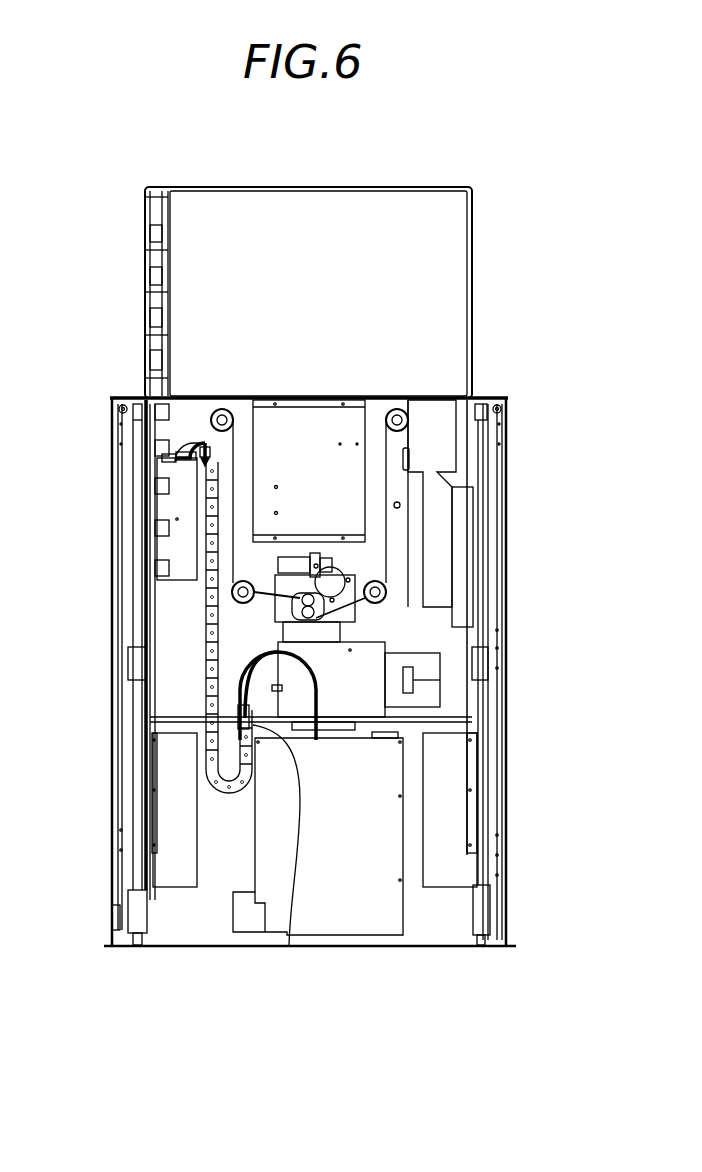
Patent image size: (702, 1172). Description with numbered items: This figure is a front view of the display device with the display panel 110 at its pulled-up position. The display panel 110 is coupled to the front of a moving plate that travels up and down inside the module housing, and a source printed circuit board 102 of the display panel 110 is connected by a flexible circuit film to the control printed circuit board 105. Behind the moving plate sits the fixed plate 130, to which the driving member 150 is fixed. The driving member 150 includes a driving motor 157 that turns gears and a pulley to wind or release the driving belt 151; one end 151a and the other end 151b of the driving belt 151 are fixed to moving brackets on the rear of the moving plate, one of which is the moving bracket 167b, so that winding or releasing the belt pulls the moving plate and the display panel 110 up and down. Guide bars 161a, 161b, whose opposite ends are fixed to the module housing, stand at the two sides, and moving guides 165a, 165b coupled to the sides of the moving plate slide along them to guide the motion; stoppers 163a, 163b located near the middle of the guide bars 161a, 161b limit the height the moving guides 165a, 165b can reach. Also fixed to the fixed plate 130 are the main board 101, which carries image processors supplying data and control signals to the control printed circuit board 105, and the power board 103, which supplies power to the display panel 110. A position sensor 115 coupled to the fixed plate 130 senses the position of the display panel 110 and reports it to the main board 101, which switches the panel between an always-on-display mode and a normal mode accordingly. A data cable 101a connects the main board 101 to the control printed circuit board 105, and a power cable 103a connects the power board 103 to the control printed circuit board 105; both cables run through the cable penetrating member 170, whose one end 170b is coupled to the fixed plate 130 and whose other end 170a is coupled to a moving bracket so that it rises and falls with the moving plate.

The display panel 110 is at (322, 214).
The source printed circuit board 102 is at (152, 297).
The one end of the driving belt 151a is at (238, 415).
The driving belt 151 is at (435, 418).
The moving bracket 167b is at (458, 432).
The other end of the driving belt 151b is at (406, 460).
The data cable 101a is at (184, 430).
The power cable 103a is at (200, 452).
The other end of the cable penetrating member 170a is at (186, 470).
The control printed circuit board 105 is at (180, 518).
The driving motor 157 is at (285, 562).
The driving member 150 is at (352, 567).
The guide bar 161a is at (145, 592).
The main board 101 is at (372, 648).
The stopper 163a is at (128, 660).
The stopper 163b is at (487, 657).
The position sensor 115 is at (410, 678).
The cable penetrating member 170 is at (212, 793).
The guide bar 161b is at (487, 813).
The moving guide 165a is at (133, 917).
The moving guide 165b is at (485, 900).
The fixed plate 130 is at (195, 922).
The one end of the cable penetrating member 170b is at (289, 946).
The power board 103 is at (363, 922).